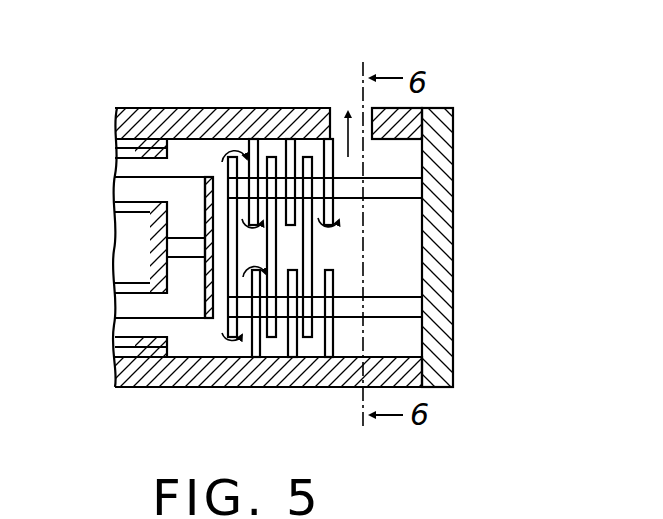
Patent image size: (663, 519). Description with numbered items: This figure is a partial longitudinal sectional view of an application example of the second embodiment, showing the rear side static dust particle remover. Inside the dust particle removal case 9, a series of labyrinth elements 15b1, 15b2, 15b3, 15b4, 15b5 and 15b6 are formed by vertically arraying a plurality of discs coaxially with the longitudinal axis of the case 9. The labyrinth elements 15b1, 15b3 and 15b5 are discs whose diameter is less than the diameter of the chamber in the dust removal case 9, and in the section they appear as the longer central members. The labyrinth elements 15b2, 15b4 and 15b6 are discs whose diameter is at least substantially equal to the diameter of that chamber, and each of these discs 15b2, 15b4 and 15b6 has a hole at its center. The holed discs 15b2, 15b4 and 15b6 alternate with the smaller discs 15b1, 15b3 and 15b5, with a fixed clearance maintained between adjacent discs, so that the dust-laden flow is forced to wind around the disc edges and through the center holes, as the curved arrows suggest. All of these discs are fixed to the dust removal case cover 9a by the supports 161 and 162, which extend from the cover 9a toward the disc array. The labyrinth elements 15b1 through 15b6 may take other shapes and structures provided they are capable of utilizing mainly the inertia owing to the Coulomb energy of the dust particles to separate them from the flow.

The dust particle removal case 9 is at (163, 108).
The dust removal case cover 9a is at (453, 255).
The support 161 is at (410, 178).
The support 162 is at (400, 318).
The labyrinth element 15b1 is at (232, 330).
The labyrinth element 15b2 is at (253, 140).
The labyrinth element 15b3 is at (271, 338).
The labyrinth element 15b4 is at (291, 140).
The labyrinth element 15b5 is at (307, 340).
The labyrinth element 15b6 is at (328, 140).